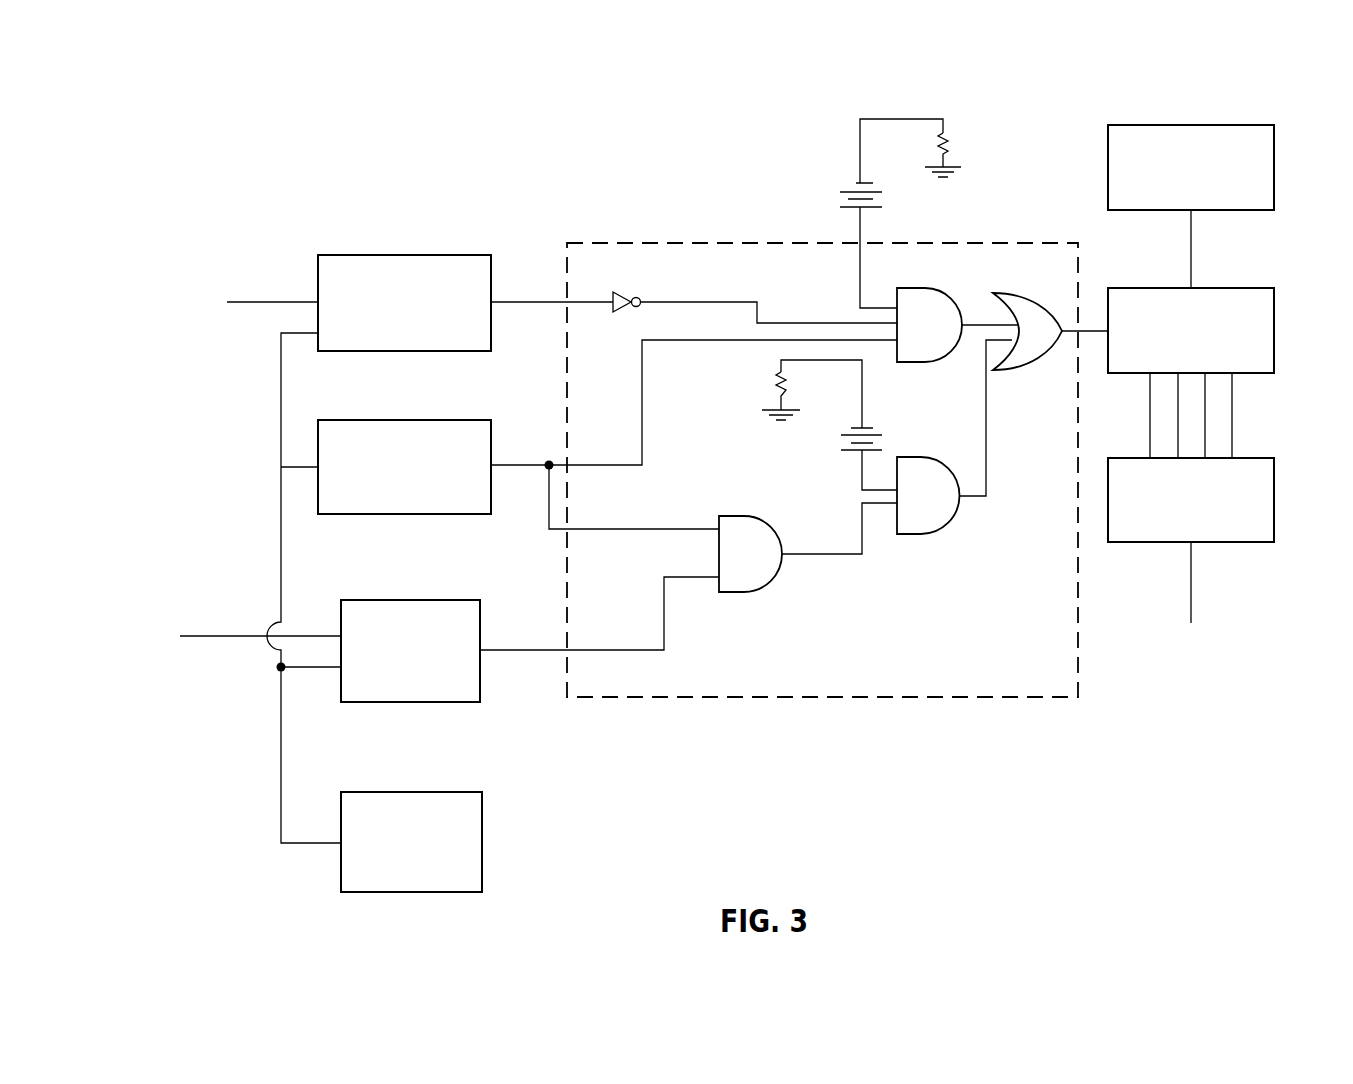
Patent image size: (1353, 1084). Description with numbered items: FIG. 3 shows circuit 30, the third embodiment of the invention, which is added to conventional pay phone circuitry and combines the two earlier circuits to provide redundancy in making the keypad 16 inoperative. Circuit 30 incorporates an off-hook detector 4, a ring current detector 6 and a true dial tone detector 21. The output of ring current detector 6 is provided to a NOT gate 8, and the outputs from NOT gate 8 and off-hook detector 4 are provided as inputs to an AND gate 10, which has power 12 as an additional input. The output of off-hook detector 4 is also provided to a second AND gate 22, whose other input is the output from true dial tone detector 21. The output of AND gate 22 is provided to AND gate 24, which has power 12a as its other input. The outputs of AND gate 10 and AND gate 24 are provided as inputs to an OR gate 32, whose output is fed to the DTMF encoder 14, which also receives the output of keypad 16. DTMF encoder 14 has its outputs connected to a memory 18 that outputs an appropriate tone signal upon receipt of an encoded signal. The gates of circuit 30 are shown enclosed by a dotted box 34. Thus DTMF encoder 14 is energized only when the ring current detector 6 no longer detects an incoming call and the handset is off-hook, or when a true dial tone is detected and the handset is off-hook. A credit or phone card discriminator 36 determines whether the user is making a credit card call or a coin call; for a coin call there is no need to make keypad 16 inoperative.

The off-hook detector 4 is at (370, 516).
The ring current detector 6 is at (368, 352).
The NOT gate 8 is at (620, 292).
The AND gate 10 is at (915, 288).
The power supply 12 is at (856, 183).
The power 12a is at (870, 428).
The DTMF encoder 14 is at (1274, 309).
The keypad 16 is at (1274, 143).
The memory 18 is at (1274, 476).
The true dial tone detector 21 is at (390, 703).
The AND gate 22 is at (752, 593).
The AND gate 24 is at (936, 534).
The circuit 30 is at (726, 520).
The OR gate 32 is at (1045, 360).
The dotted box 34 is at (760, 698).
The credit or phone card discriminator 36 is at (380, 893).